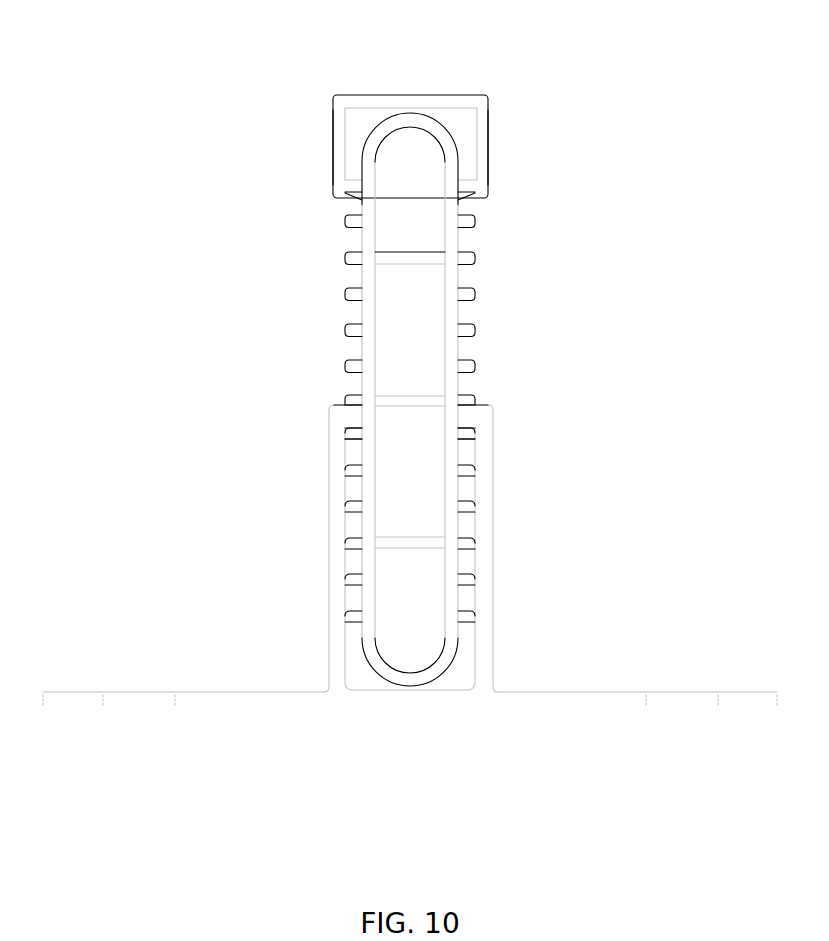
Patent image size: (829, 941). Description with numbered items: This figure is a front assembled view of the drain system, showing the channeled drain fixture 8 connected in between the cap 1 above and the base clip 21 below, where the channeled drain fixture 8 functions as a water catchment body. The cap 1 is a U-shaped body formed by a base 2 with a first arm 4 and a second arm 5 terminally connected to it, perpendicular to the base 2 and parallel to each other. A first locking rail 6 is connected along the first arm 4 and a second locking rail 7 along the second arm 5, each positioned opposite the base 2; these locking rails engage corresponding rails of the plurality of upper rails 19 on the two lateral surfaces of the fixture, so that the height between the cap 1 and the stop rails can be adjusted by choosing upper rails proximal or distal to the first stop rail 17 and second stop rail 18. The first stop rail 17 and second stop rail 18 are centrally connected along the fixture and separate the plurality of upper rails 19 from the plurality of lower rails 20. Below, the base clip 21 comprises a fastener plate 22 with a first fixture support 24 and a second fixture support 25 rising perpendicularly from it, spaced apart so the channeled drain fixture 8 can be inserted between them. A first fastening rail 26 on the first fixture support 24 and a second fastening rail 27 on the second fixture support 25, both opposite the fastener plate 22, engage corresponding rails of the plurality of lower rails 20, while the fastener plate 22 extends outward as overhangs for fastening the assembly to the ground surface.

The cap 1 is at (426, 359).
The base 2 is at (390, 98).
The first arm 4 is at (338, 120).
The second arm 5 is at (487, 135).
The first locking rail 6 is at (348, 197).
The second locking rail 7 is at (472, 197).
The channeled drain fixture 8 is at (548, 321).
The first stop rail 17 is at (362, 427).
The second stop rail 18 is at (458, 427).
The plurality of upper rails 19 is at (350, 187).
The plurality of lower rails 20 is at (348, 437).
The base clip 21 is at (410, 564).
The fastener plate 22 is at (210, 705).
The first fixture support 24 is at (328, 625).
The second fixture support 25 is at (493, 625).
The first fastening rail 26 is at (356, 423).
The second fastening rail 27 is at (458, 422).